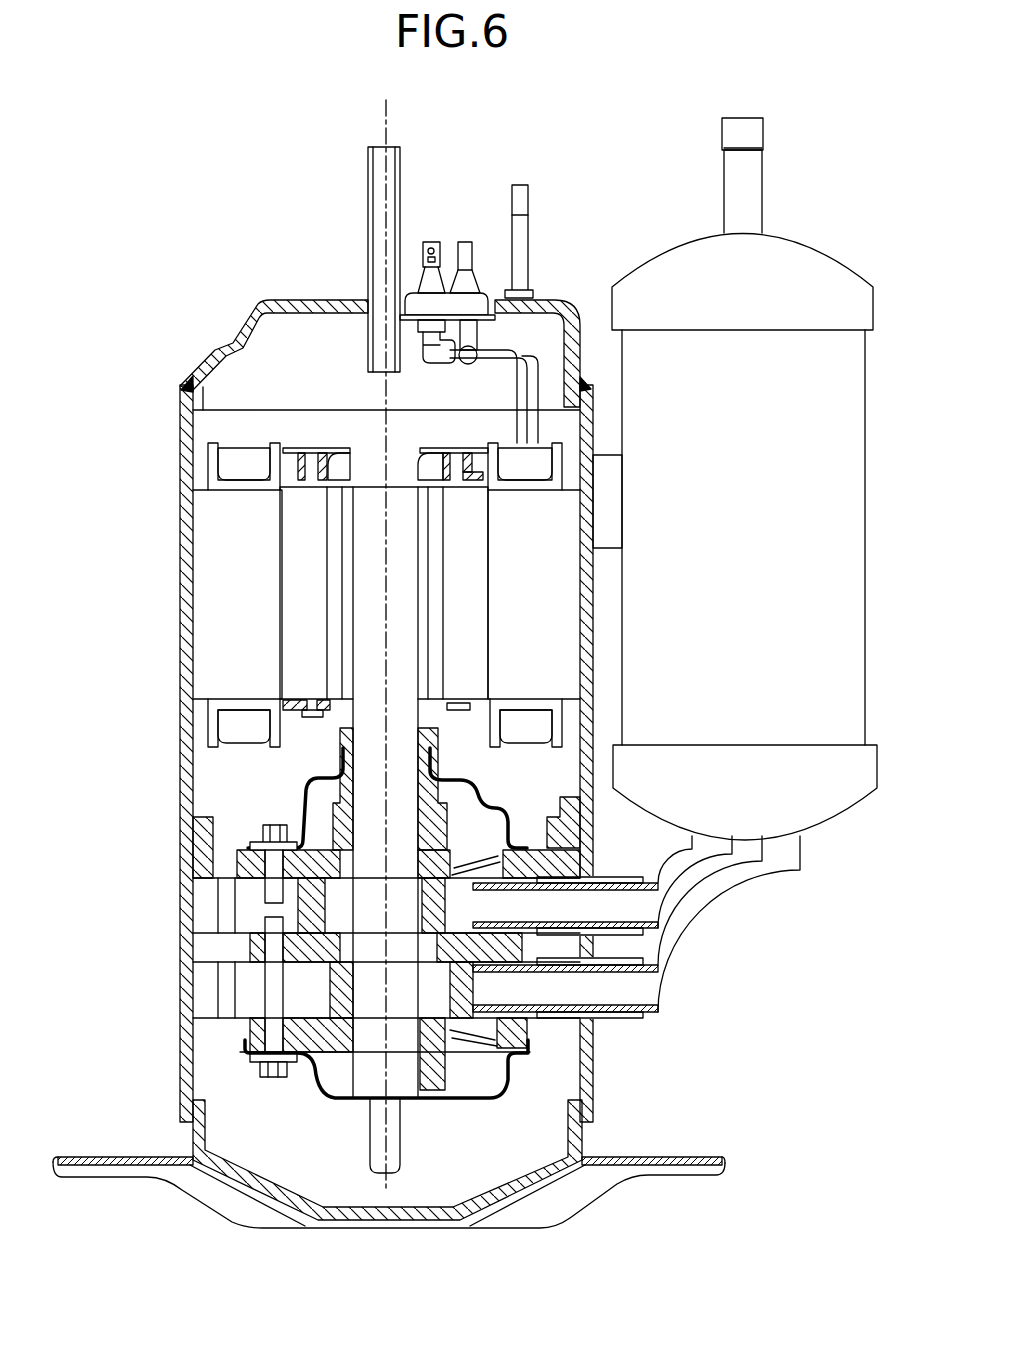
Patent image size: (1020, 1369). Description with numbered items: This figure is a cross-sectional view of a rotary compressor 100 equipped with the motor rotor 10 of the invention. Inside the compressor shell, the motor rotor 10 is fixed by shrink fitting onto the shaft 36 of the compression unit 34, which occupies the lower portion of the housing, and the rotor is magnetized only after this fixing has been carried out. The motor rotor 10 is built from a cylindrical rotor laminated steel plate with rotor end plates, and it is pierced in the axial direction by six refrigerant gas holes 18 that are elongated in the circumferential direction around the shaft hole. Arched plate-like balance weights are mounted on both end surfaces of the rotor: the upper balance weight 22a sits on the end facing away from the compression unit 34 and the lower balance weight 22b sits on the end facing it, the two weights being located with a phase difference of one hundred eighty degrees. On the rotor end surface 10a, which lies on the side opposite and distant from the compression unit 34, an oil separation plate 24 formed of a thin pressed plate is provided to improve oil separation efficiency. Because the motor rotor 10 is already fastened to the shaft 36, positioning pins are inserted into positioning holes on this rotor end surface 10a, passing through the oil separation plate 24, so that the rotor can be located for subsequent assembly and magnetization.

The rotary compressor 100 is at (195, 183).
The motor rotor 10 is at (298, 426).
The rotor end surface 10a is at (279, 582).
The refrigerant gas holes 18 is at (338, 683).
The upper balance weight 22a is at (477, 450).
The lower balance weight 22b is at (295, 712).
The oil separation plate 24 is at (356, 445).
The compression unit 34 is at (137, 770).
The shaft 36 is at (400, 654).